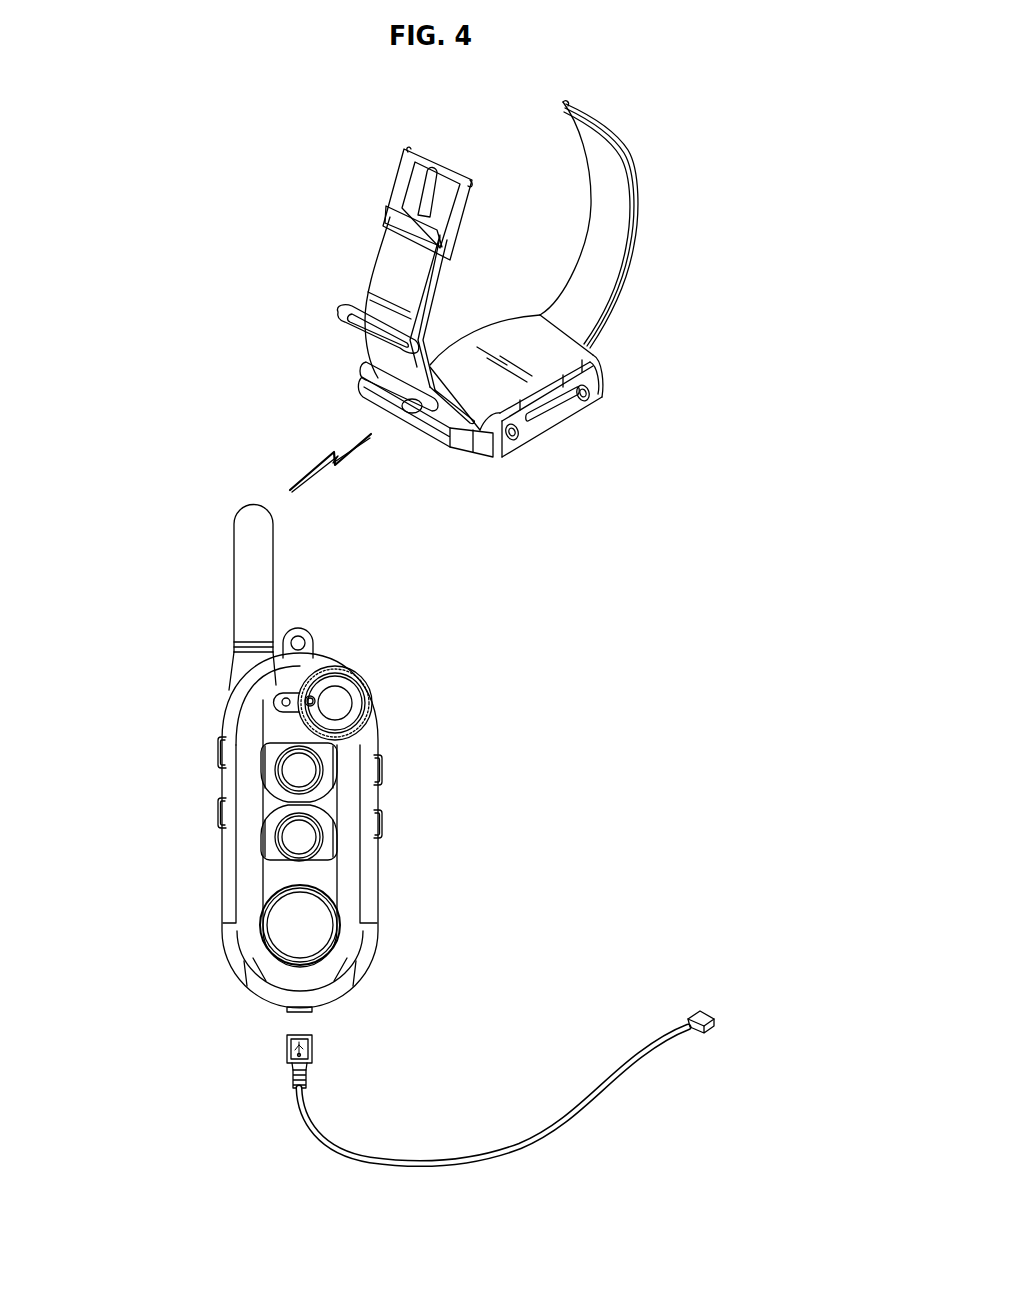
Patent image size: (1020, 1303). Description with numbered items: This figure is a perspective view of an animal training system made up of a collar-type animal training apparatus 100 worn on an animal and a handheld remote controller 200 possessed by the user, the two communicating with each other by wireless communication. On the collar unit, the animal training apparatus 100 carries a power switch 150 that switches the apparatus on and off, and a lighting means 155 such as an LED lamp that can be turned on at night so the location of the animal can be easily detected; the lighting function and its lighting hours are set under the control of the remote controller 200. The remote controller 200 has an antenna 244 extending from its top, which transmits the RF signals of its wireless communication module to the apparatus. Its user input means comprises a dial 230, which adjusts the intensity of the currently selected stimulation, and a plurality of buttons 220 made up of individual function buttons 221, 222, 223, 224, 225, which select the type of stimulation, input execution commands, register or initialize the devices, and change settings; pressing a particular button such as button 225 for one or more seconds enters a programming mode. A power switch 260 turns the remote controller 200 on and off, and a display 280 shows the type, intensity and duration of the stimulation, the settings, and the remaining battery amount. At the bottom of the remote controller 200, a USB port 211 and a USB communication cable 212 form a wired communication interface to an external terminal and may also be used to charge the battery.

The animal training apparatus 100 is at (487, 288).
The power switch 150 is at (586, 401).
The lighting means 155 is at (515, 441).
The remote controller 200 is at (428, 834).
The USB port 211 is at (295, 1012).
The USB communication cable 212 is at (482, 1156).
The buttons 220 is at (319, 841).
The function button 221 is at (218, 748).
The function button 222 is at (219, 815).
The function button 223 is at (300, 764).
The function button 224 is at (297, 836).
The function button 225 is at (383, 770).
The dial 230 is at (340, 695).
The antenna 244 is at (268, 568).
The power switch 260 is at (383, 822).
The display 280 is at (278, 930).